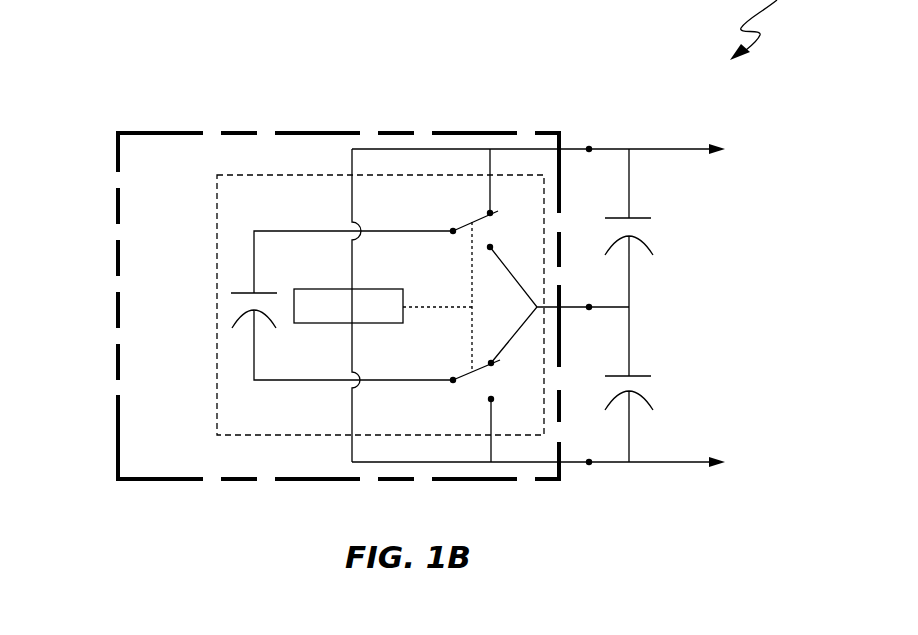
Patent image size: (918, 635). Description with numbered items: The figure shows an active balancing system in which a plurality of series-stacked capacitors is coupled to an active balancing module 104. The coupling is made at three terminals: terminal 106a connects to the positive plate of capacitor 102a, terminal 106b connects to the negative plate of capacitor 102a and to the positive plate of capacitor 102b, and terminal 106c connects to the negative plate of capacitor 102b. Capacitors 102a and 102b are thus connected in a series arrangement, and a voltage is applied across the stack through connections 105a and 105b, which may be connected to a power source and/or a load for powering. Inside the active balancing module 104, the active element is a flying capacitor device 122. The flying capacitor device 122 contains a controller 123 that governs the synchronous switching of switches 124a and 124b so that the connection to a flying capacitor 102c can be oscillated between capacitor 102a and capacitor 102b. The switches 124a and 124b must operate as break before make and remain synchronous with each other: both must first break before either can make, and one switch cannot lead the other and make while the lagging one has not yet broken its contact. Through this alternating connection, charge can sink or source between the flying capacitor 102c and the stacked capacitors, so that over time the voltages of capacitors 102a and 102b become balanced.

The active balancing module 104 is at (118, 133).
The flying capacitor device 122 is at (217, 175).
The controller 123 is at (335, 289).
The capacitor 102a is at (637, 218).
The capacitor 102b is at (637, 376).
The flying capacitor 102c is at (260, 316).
The switch 124a is at (453, 226).
The switch 124b is at (453, 376).
The connection 105a is at (747, 150).
The connection 105b is at (747, 462).
The terminal 106a is at (603, 139).
The terminal 106b is at (603, 296).
The terminal 106c is at (603, 451).